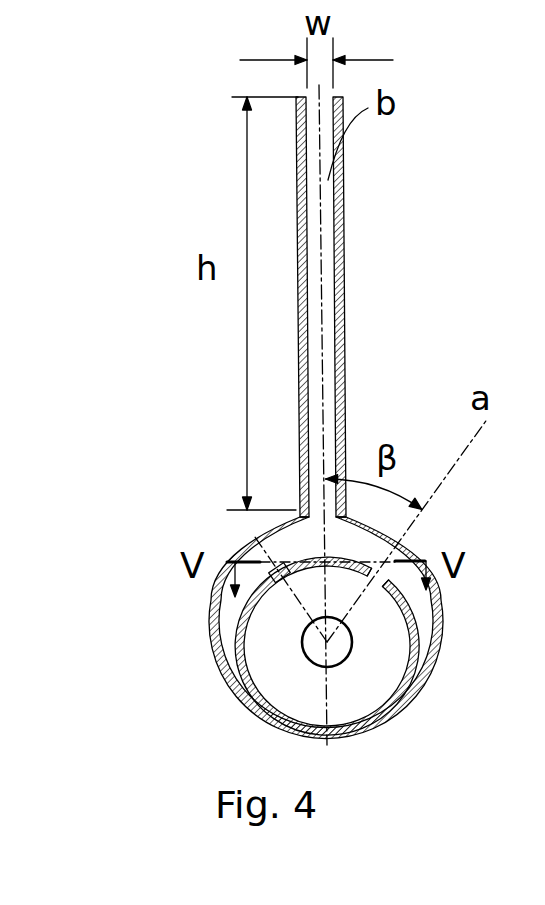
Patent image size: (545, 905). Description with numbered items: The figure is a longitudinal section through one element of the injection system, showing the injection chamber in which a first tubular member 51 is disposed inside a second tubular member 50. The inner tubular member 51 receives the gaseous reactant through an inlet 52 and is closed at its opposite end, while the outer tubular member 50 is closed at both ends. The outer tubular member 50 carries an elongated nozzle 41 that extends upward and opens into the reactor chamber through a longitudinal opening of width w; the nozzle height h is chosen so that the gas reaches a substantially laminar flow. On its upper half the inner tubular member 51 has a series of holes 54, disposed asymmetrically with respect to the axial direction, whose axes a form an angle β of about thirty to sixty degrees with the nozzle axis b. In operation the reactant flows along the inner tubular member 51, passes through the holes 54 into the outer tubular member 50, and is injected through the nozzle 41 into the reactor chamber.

The elongated nozzle 41 is at (313, 316).
The second tubular member 50 is at (258, 536).
The first tubular member 51 is at (305, 695).
The inlet 52 is at (351, 650).
The holes 54 is at (374, 566).